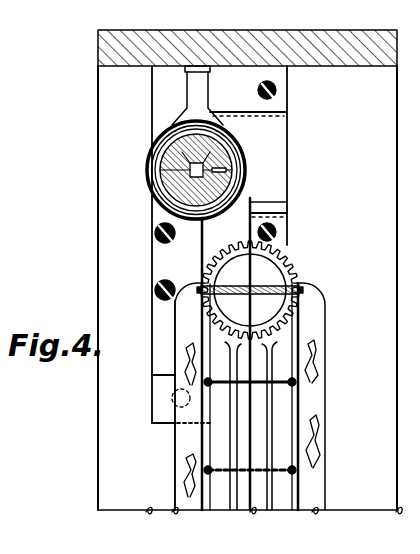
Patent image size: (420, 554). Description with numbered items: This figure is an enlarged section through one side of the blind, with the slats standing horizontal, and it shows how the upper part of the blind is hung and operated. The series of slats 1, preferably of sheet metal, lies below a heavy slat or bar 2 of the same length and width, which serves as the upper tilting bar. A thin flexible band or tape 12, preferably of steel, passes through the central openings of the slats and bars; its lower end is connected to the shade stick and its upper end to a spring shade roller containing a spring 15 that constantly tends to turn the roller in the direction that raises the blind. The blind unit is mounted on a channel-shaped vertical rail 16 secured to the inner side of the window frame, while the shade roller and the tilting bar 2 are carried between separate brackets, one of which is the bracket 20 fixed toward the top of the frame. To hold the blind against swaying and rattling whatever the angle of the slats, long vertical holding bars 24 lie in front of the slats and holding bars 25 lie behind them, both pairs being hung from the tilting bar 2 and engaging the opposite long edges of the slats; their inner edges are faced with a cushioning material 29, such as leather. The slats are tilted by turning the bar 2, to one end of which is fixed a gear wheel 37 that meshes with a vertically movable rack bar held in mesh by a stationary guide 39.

The slats 1 is at (300, 348).
The heavy slat or bar 2 is at (286, 268).
The thin flexible band or tape 12 is at (284, 183).
The spring 15 is at (164, 180).
The vertical rails 16 is at (282, 493).
The bracket 20 is at (288, 137).
The holding bars 24 is at (192, 456).
The holding bars 25 is at (318, 378).
The cushioning material 29 is at (290, 413).
The gear wheel 37 is at (300, 288).
The stationary guide 39 is at (168, 318).